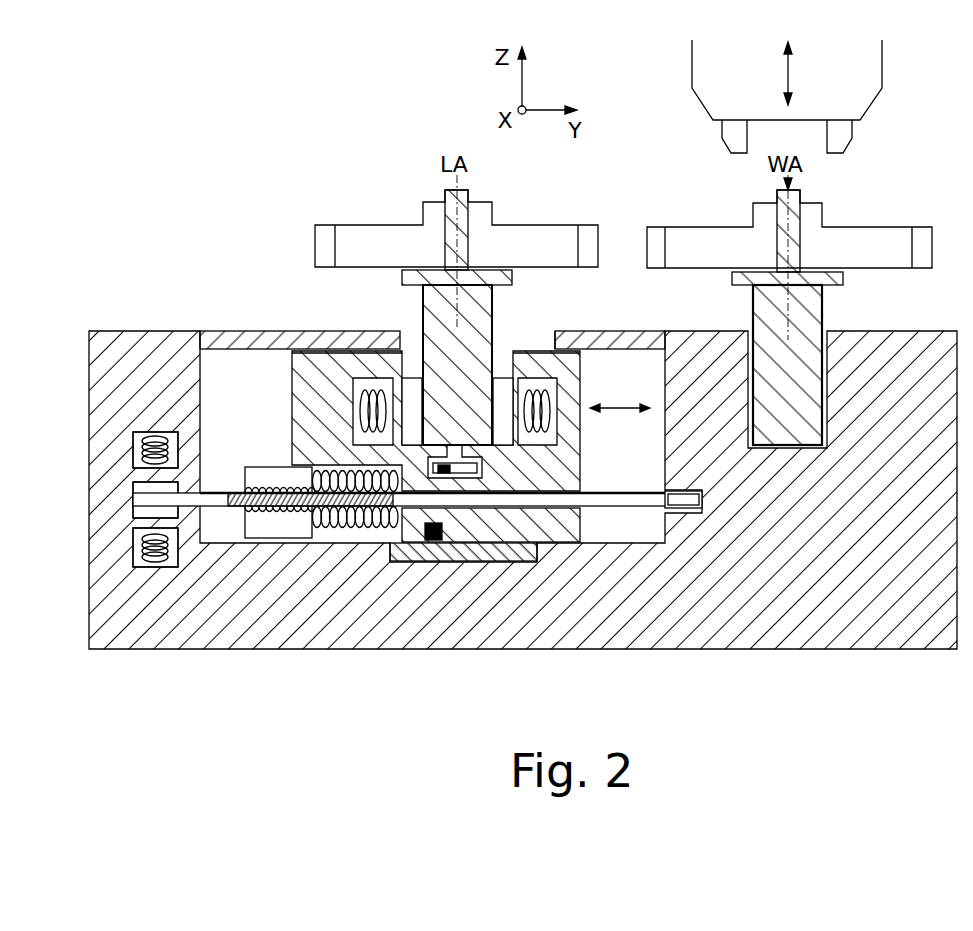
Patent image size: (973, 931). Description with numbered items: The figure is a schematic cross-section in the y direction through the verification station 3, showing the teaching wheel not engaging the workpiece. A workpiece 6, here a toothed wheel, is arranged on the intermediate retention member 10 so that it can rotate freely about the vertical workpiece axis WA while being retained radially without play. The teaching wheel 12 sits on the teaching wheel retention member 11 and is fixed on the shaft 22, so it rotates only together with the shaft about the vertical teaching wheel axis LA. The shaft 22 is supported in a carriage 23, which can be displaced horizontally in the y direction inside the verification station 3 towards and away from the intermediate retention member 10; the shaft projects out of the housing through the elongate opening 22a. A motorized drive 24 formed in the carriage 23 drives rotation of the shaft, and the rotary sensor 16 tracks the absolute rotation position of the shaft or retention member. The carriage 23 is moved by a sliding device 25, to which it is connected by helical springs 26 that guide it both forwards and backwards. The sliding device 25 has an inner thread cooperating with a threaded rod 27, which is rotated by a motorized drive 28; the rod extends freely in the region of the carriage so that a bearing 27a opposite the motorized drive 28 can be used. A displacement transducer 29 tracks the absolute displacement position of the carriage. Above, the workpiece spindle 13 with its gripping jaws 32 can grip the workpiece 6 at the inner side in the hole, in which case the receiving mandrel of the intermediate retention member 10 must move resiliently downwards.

The verification station 3 is at (193, 283).
The workpiece 6 is at (712, 240).
The intermediate retention member 10 is at (807, 290).
The teaching wheel retention member 11 is at (388, 318).
The teaching wheel 12 is at (380, 235).
The workpiece spindle 13 is at (863, 80).
The rotary sensor 16 is at (485, 468).
The shaft 22 is at (477, 285).
The elongate opening 22a is at (513, 337).
The carriage 23 is at (321, 445).
The motorized drive 24 is at (352, 403).
The sliding device 25 is at (260, 478).
The helical springs 26 is at (337, 528).
The threaded rod 27 is at (213, 500).
The bearing 27a is at (686, 530).
The motorized drive 28 is at (135, 437).
The displacement transducer 29 is at (436, 554).
The gripping jaws 32 is at (842, 140).